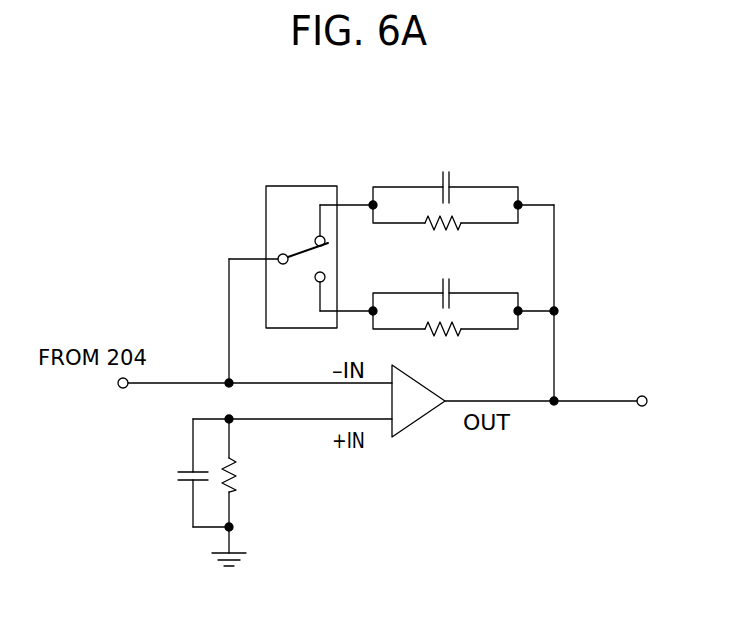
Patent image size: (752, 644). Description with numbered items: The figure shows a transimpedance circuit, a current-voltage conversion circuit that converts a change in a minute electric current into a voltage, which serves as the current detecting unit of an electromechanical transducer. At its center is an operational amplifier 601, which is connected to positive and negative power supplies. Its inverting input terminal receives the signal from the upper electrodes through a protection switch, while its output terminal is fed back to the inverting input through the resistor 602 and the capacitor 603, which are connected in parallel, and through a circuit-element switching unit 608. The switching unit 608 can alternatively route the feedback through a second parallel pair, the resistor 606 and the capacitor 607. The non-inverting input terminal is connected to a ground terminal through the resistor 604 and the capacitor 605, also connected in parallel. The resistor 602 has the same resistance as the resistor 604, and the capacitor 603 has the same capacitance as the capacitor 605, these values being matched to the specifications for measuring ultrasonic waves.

The operational amplifier 601 is at (413, 422).
The resistor 602 is at (460, 229).
The capacitor 603 is at (452, 172).
The resistor 604 is at (238, 468).
The capacitor 605 is at (187, 484).
The resistor 606 is at (460, 334).
The capacitor 607 is at (452, 279).
The circuit-element switching unit 608 is at (302, 186).